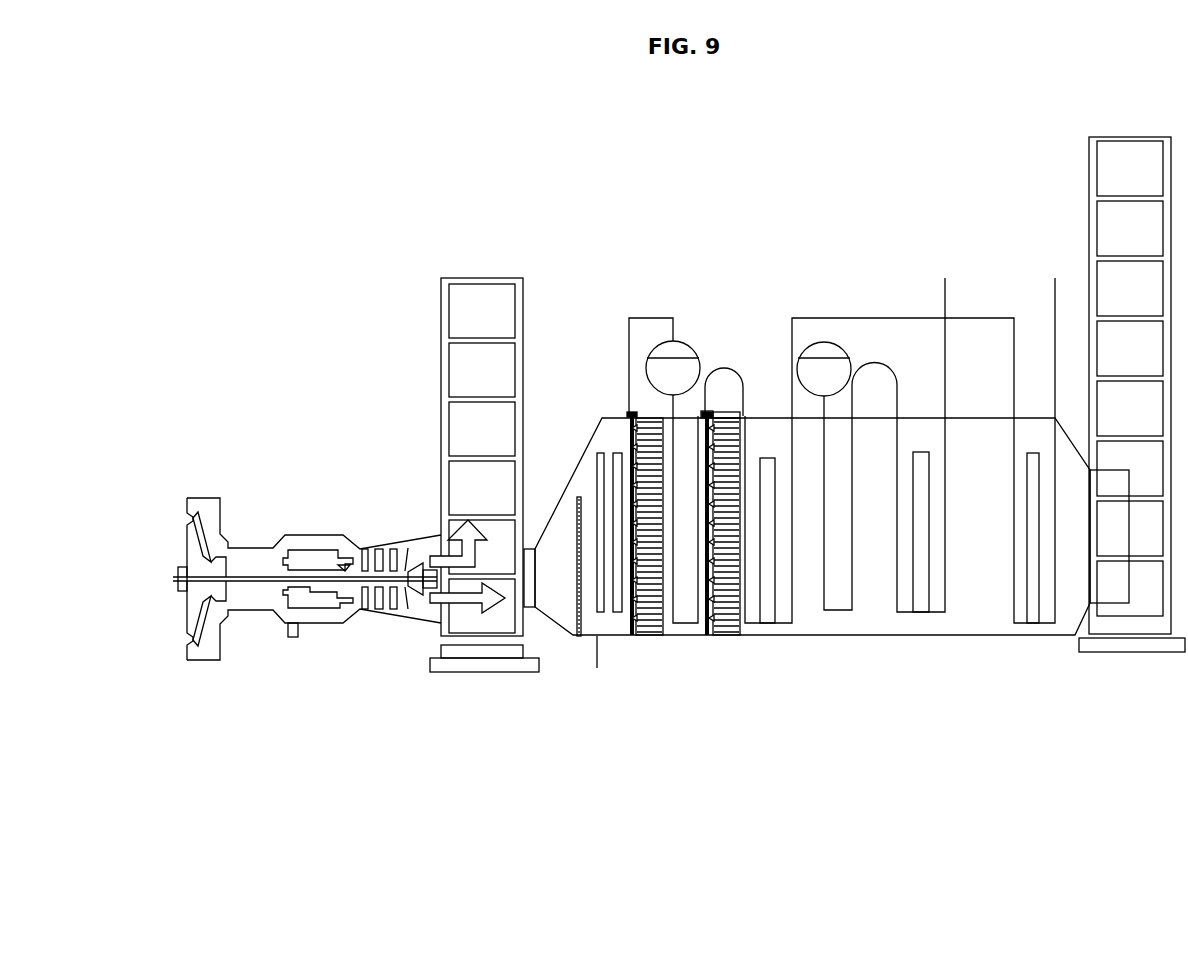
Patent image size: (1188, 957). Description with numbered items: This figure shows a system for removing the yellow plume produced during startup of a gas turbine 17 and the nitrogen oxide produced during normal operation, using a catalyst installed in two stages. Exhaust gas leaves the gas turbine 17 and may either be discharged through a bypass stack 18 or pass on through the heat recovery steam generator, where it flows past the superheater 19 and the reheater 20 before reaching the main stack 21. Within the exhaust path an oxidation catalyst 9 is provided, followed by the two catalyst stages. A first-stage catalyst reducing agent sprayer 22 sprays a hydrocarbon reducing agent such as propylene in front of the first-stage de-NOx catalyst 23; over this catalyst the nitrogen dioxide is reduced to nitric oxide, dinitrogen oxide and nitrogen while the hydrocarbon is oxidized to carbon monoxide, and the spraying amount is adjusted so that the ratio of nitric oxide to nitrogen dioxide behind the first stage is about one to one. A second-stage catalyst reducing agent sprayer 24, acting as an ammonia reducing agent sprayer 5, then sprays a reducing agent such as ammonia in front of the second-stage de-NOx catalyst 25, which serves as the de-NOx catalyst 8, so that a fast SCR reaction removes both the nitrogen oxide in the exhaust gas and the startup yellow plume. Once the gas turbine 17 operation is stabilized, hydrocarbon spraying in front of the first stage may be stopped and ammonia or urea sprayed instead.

The ammonia reducing agent sprayer 5 is at (707, 408).
The de-NOx catalyst 8 is at (733, 410).
The oxidation catalyst 9 is at (573, 638).
The gas turbine 17 is at (330, 627).
The bypass stack 18 is at (488, 276).
The superheater of heat recovery steam generator 19 is at (612, 617).
The reheater of heat recovery steam generator 20 is at (805, 628).
The main stack 21 is at (1075, 152).
The first-stage catalyst reducing agent sprayer 22 is at (629, 637).
The first-stage de-NOx catalyst 23 is at (654, 638).
The second-stage catalyst reducing agent sprayer 24 is at (708, 638).
The second-stage de-NOx catalyst 25 is at (727, 638).